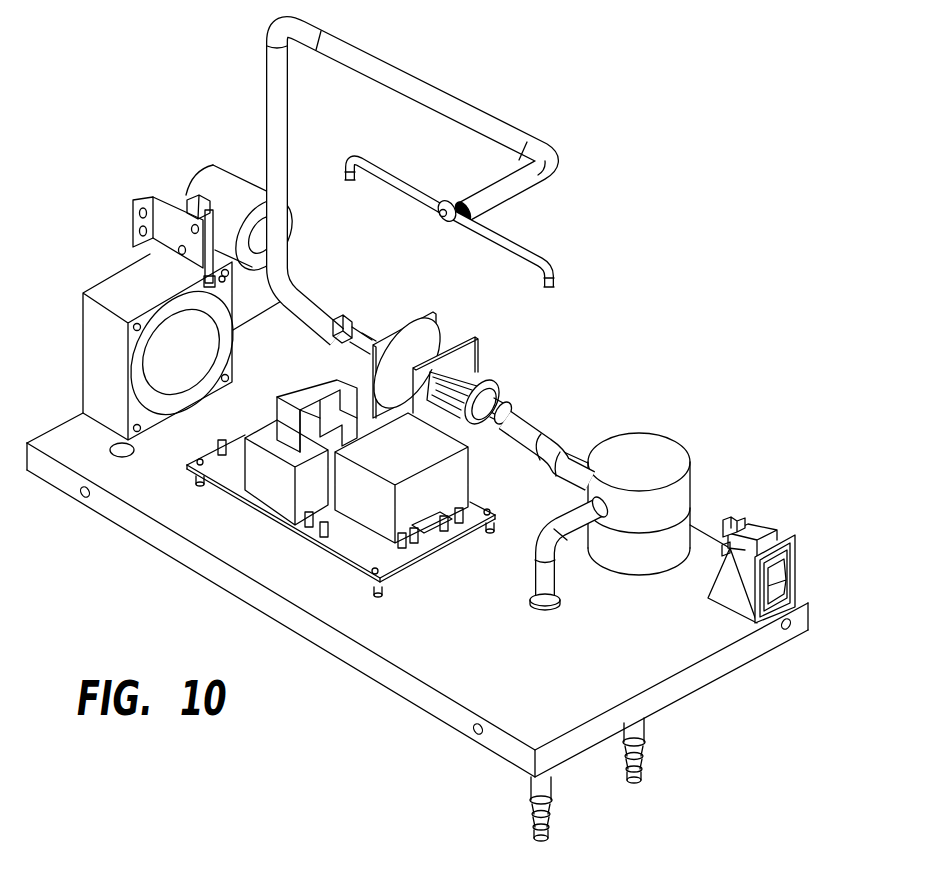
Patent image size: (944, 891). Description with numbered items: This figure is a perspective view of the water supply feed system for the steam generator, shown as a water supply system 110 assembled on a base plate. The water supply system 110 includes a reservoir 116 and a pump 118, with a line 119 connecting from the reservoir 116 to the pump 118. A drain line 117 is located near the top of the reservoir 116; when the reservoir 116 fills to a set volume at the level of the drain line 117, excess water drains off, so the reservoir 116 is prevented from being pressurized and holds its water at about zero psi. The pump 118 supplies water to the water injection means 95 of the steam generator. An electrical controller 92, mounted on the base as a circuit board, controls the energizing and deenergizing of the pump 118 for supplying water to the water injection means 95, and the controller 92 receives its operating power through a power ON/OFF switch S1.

The water supply system 110 is at (417, 503).
The water injection means 95 is at (369, 190).
The pump 118 is at (437, 364).
The line 119 is at (547, 439).
The reservoir 116 is at (653, 493).
The drain line 117 is at (544, 552).
The electrical controller 92 is at (342, 510).
The power ON/OFF switch S1 is at (778, 570).